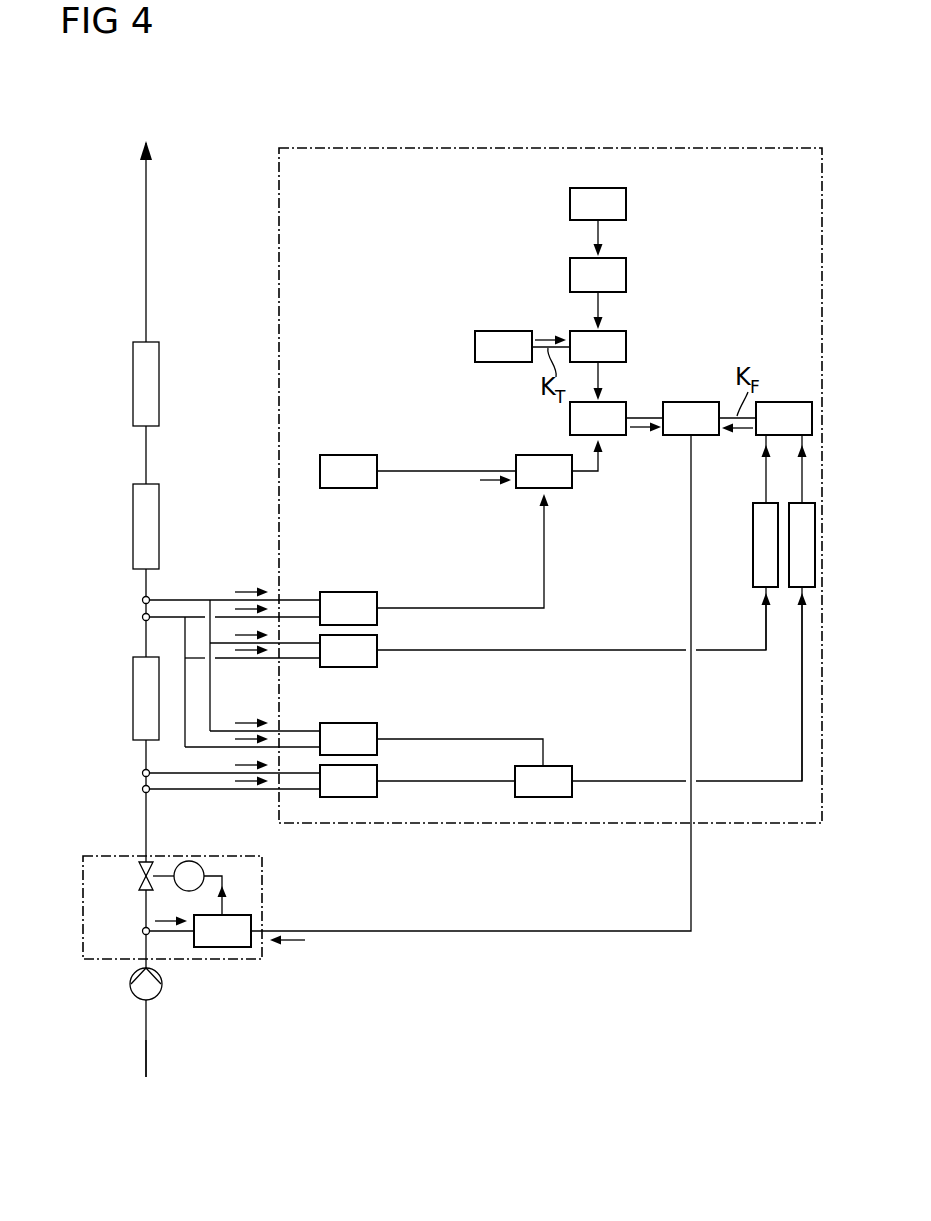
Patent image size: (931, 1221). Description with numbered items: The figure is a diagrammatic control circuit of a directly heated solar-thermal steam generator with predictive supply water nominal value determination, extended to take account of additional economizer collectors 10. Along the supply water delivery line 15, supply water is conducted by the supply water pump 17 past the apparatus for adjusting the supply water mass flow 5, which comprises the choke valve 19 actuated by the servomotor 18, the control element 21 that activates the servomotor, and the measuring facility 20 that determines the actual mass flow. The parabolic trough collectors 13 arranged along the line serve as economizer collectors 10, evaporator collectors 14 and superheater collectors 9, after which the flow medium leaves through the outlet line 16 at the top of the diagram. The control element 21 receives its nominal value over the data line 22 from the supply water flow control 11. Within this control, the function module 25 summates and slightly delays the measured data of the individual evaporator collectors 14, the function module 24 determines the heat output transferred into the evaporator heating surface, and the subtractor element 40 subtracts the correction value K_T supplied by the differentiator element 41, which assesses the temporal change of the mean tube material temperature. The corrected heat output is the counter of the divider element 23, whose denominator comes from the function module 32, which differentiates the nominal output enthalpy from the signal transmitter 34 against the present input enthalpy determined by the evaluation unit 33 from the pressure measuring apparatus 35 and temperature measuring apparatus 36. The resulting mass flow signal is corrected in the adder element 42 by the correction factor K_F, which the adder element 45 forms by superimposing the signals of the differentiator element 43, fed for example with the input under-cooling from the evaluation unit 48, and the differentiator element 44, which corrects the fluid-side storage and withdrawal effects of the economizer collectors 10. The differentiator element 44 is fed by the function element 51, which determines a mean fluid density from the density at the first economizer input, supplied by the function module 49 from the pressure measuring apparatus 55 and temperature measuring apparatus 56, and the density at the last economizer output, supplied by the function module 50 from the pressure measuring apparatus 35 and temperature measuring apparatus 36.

The apparatus for adjusting the supply water mass flow 5 is at (197, 960).
The superheater collector 9 is at (133, 384).
The economizer collector 10 is at (133, 702).
The supply water flow control 11 is at (420, 148).
The parabolic trough collector 13 is at (102, 541).
The evaporator collector 14 is at (133, 518).
The supply water delivery line 15 is at (146, 1034).
The outlet line 16 is at (146, 190).
The supply water pump 17 is at (130, 989).
The servomotor 18 is at (199, 864).
The choke valve 19 is at (139, 878).
The measuring facility 20 is at (142, 931).
The control element 21 is at (222, 948).
The data line 22 is at (506, 932).
The divider element 23 is at (618, 402).
The function module 24 is at (626, 275).
The function module 25 is at (626, 203).
The function module 32 is at (527, 455).
The evaluation unit 33 is at (347, 592).
The signal transmitter 34 is at (340, 455).
The pressure measuring apparatus 35 is at (142, 618).
The temperature measuring apparatus 36 is at (142, 599).
The subtractor element 40 is at (626, 345).
The differentiator element 41 is at (502, 331).
The adder element 42 is at (700, 402).
The differentiator element 43 is at (753, 545).
The differentiator element 44 is at (797, 588).
The adder element 45 is at (780, 402).
The evaluation unit 48 is at (377, 640).
The function module 49 is at (377, 731).
The function module 50 is at (377, 773).
The function element 51 is at (553, 766).
The pressure measuring apparatus 55 is at (142, 790).
The temperature measuring apparatus 56 is at (142, 773).